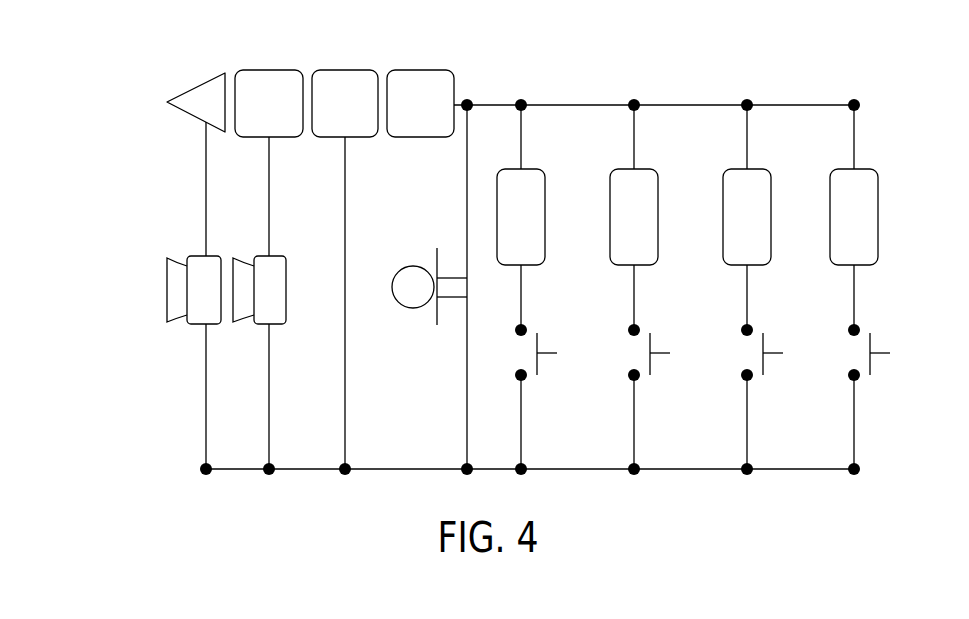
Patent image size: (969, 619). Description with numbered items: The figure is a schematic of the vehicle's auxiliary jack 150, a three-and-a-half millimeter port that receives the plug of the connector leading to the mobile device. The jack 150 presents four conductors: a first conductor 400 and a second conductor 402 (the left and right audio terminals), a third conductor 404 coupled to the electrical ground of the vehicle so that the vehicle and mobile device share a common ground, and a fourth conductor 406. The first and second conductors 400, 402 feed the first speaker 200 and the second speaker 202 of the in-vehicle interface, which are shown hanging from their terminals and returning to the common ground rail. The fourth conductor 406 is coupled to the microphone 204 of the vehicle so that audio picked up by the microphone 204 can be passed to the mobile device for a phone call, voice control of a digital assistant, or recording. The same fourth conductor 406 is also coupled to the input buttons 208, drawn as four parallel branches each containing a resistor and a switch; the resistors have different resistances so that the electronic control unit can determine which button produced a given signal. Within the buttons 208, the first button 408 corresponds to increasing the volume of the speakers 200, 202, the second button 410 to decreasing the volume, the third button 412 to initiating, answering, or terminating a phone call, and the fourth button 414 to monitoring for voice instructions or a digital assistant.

The auxiliary jack 150 is at (124, 95).
The first conductor 400 is at (198, 82).
The second conductor 402 is at (270, 70).
The third conductor 404 is at (345, 70).
The fourth conductor 406 is at (418, 70).
The first speaker 200 is at (186, 262).
The second speaker 202 is at (252, 262).
The microphone 204 is at (408, 267).
The input buttons 208 is at (495, 90).
The first button 408 is at (557, 353).
The second button 410 is at (670, 353).
The third button 412 is at (783, 353).
The fourth button 414 is at (890, 353).